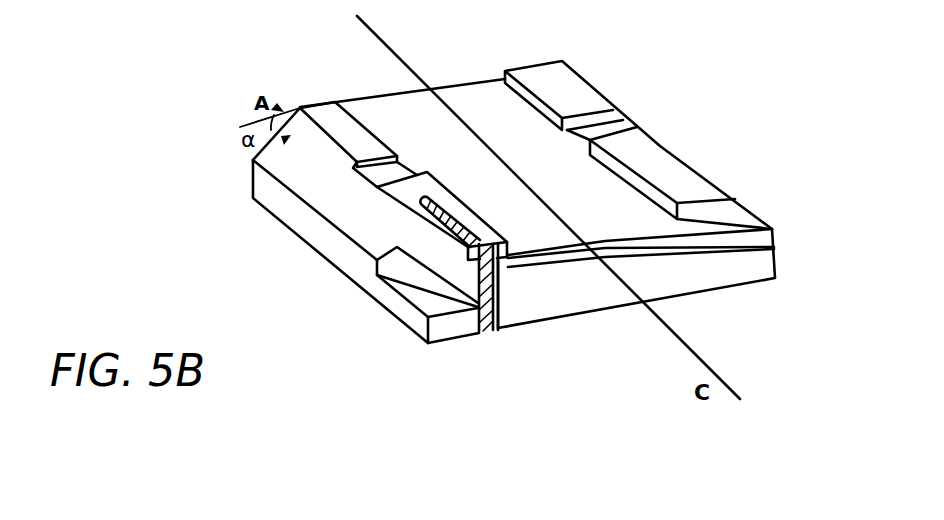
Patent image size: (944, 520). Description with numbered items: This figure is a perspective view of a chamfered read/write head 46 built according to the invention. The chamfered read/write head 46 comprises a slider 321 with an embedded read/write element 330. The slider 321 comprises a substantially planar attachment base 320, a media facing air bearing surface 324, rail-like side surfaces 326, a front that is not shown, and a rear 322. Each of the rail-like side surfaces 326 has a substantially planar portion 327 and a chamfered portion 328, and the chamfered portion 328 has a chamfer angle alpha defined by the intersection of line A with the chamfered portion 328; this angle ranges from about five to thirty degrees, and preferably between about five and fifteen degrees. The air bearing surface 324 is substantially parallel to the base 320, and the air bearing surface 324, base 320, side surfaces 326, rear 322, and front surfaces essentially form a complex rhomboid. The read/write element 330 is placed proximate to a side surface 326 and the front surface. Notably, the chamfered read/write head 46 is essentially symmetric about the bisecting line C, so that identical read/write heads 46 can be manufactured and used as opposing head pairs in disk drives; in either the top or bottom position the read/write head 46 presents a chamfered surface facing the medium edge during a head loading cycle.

The chamfered read/write head 46 is at (783, 151).
The attachment base 320 is at (703, 292).
The slider 321 is at (748, 240).
The rear 322 is at (543, 310).
The air bearing surface 324 is at (466, 98).
The side surfaces 326 is at (677, 153).
The planar portion 327 is at (418, 186).
The chamfered portion 328 is at (318, 192).
The read/write element 330 is at (497, 332).